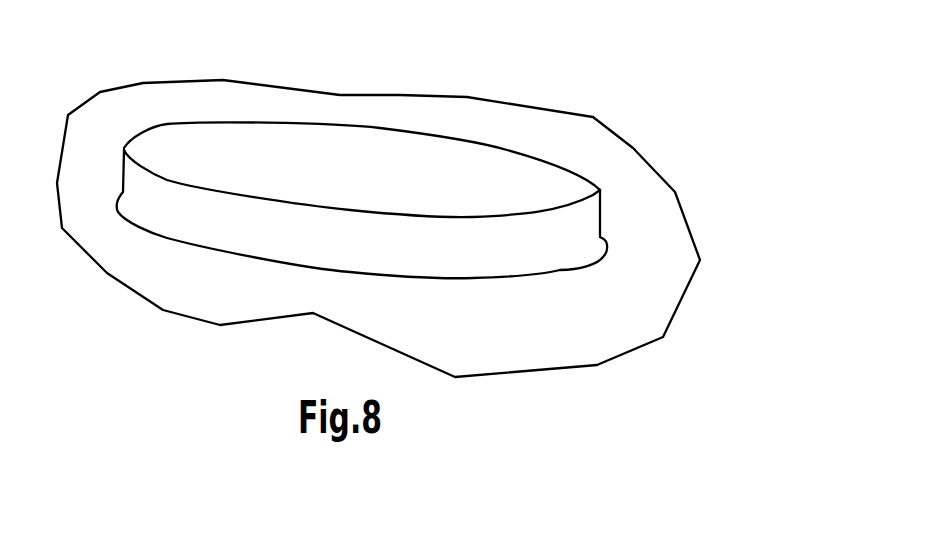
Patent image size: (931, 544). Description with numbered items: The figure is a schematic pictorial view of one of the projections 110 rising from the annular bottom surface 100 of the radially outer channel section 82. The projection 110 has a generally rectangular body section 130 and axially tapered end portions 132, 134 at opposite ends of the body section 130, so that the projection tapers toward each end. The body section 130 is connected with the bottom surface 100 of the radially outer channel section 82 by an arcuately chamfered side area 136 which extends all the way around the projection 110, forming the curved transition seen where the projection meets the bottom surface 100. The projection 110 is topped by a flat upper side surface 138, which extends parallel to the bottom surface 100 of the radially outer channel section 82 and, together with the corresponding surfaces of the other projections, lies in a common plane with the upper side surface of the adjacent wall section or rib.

The radially outer channel section 82 is at (700, 212).
The annular bottom surface 100 is at (643, 312).
The projection 110 is at (405, 234).
The body section 130 is at (347, 167).
The axially tapered end portion 132 is at (150, 145).
The axially tapered end portion 134 is at (585, 188).
The arcuately chamfered side area 136 is at (478, 268).
The flat upper side surface 138 is at (483, 173).